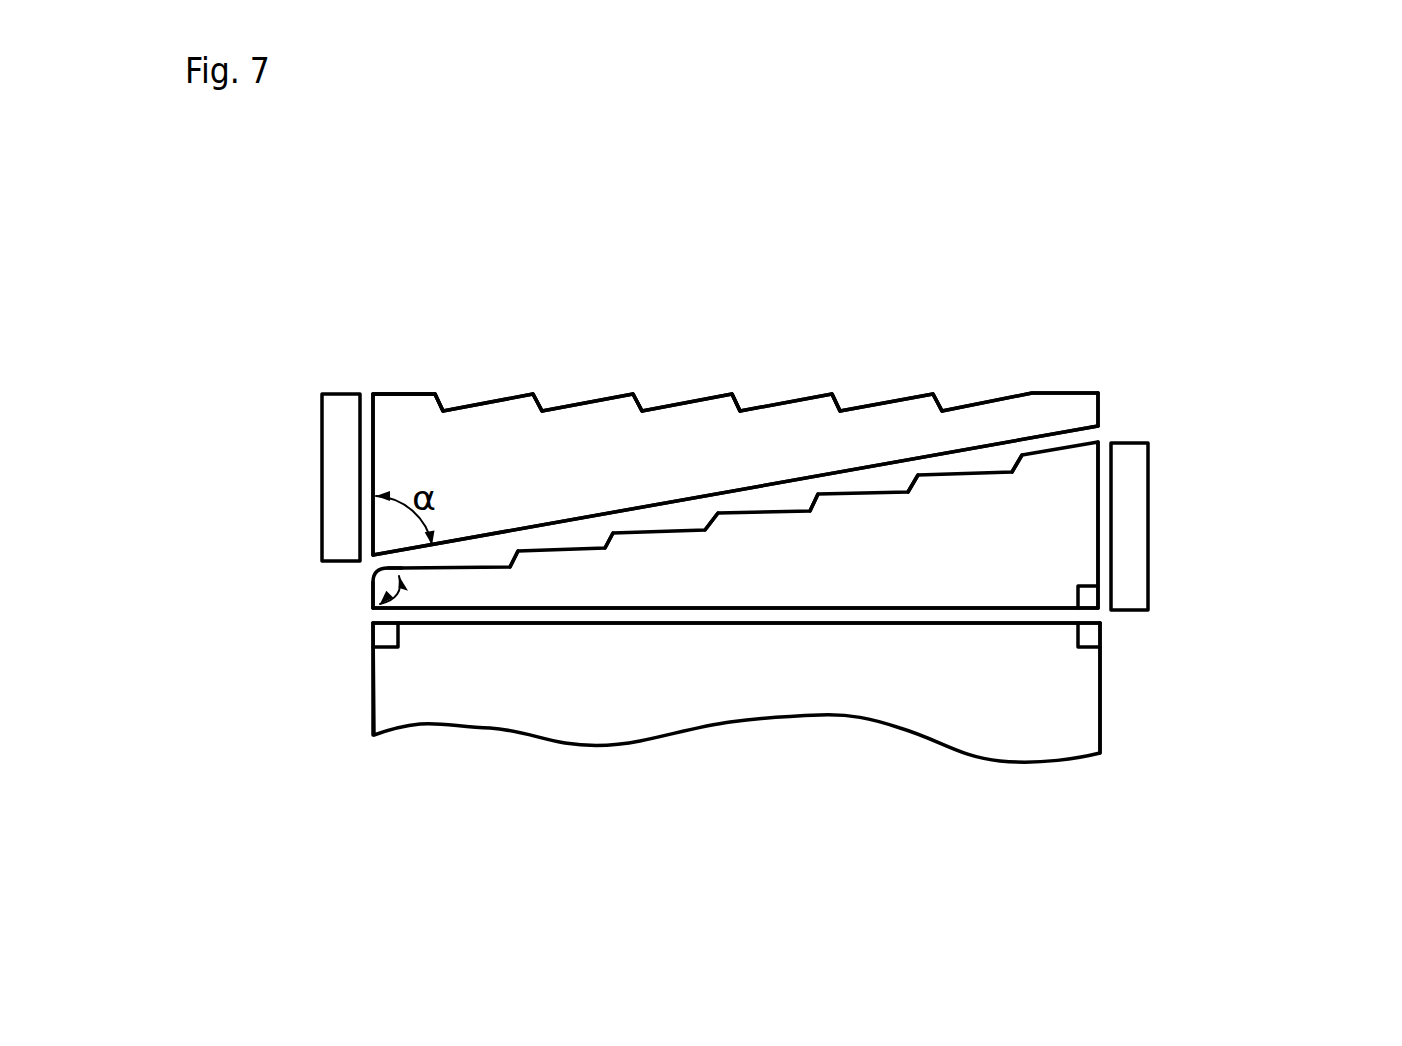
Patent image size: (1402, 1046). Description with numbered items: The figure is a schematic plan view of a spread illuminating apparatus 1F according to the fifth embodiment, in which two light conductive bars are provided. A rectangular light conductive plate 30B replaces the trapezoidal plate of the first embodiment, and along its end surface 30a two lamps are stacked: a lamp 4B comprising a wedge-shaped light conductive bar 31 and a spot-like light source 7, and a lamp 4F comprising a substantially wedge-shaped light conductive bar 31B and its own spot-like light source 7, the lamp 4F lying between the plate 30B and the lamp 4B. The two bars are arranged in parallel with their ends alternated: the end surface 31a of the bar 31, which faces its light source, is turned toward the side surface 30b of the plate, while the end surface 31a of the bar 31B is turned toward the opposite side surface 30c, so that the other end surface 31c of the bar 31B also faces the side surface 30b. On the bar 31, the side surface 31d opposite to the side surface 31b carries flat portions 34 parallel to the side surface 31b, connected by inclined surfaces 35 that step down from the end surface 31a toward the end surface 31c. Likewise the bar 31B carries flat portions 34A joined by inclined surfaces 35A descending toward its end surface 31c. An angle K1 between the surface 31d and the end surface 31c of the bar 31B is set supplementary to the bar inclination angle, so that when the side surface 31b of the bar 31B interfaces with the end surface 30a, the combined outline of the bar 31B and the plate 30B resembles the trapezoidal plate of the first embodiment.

The spread illuminating apparatus 1F is at (1118, 241).
The lamp 4B is at (272, 466).
The lamp 4F is at (1214, 537).
The spot-like light source 7 is at (338, 427).
The end surface of light conductive plate 30a is at (1021, 621).
The side surface of light conductive plate 30b is at (373, 704).
The side surface of light conductive plate 30c is at (1099, 685).
The rectangular light conductive plate 30B is at (1078, 732).
The light conductive bar 31 is at (418, 420).
The end surface of light conductive bar 31a is at (372, 485).
The side surface of light conductive bar 31b is at (910, 615).
The other end surface of light conductive bar 31c is at (1099, 403).
The side surface of light conductive bar 31d is at (372, 394).
The light conductive bar 31B is at (993, 583).
The flat portions 34 is at (478, 402).
The flat portions 34A is at (947, 467).
The inclined surfaces 35 is at (545, 403).
The inclined surfaces 35A is at (1024, 459).
The angle K1 is at (400, 587).